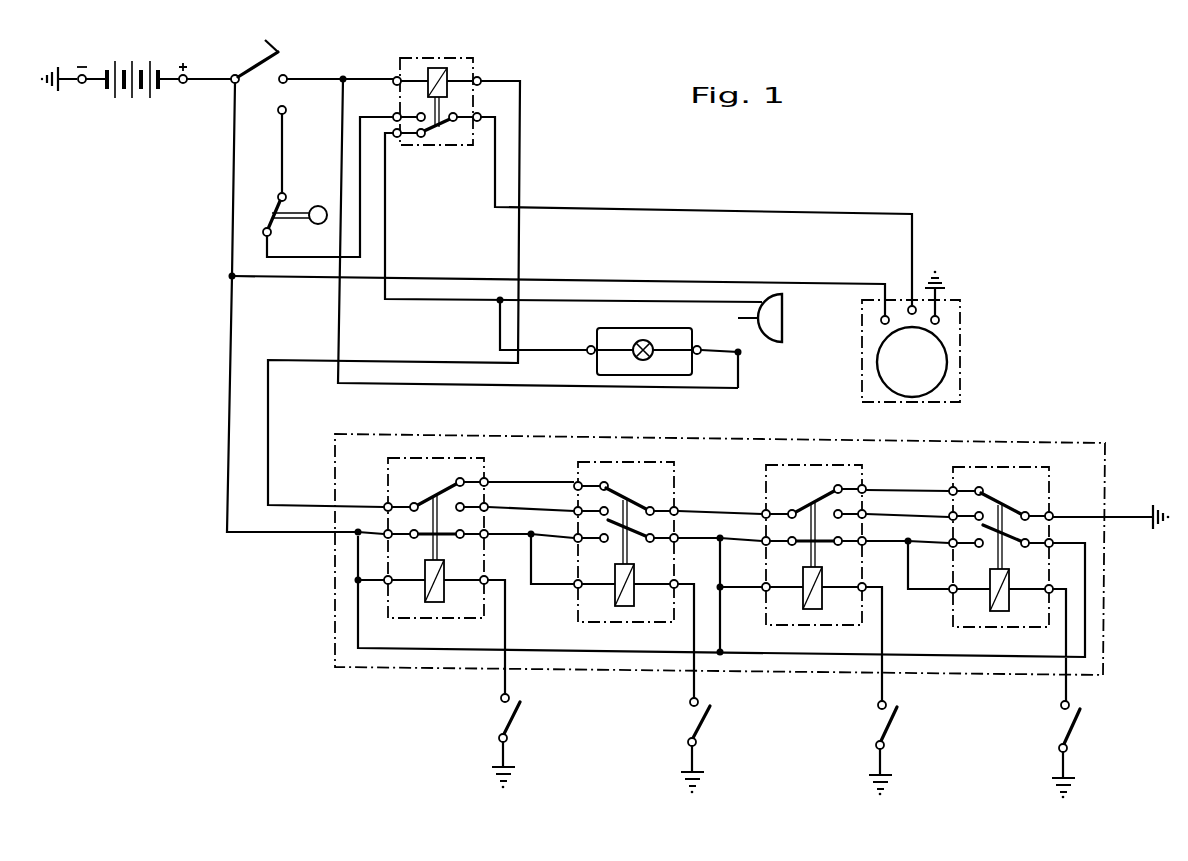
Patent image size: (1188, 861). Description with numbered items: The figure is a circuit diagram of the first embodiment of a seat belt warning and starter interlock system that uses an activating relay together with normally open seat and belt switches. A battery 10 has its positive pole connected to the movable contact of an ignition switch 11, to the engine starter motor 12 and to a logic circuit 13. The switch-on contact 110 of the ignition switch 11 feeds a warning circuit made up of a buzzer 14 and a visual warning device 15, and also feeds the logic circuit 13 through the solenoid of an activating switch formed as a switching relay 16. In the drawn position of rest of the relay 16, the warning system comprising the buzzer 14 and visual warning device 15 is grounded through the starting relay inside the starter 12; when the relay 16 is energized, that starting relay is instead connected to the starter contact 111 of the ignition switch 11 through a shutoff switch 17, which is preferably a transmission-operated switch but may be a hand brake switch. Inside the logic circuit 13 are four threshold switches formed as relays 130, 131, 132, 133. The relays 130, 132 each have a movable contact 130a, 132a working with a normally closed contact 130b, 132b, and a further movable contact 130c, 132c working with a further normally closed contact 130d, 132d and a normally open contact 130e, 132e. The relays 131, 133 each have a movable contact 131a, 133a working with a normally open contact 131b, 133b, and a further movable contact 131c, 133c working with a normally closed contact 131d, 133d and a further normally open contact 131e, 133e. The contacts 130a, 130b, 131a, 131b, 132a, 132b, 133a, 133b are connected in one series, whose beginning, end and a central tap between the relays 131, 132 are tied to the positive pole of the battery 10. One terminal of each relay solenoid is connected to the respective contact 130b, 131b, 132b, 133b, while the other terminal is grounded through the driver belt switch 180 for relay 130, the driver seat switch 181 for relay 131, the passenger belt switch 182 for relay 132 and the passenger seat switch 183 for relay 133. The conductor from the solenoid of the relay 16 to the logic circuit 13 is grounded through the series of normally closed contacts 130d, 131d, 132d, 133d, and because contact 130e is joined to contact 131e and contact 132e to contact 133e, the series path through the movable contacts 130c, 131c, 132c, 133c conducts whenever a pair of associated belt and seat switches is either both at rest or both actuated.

The battery 10 is at (140, 60).
The ignition switch 11 is at (263, 50).
The switch-on contact 110 is at (286, 74).
The starter contact 111 is at (287, 112).
The shutoff switch 17 is at (297, 208).
The switching relay 16 is at (478, 66).
The engine starter motor 12 is at (963, 339).
The buzzer 14 is at (784, 322).
The visual warning device 15 is at (600, 336).
The logic circuit 13 is at (1065, 443).
The relay 130 is at (461, 546).
The movable contact 130a is at (425, 547).
The normally closed contact 130b is at (488, 547).
The further movable contact 130c is at (426, 489).
The further normally closed contact 130d is at (491, 464).
The normally open contact 130e is at (497, 498).
The relay 131 is at (625, 549).
The movable contact 131a is at (660, 546).
The normally open contact 131b is at (600, 553).
The further movable contact 131c is at (636, 490).
The normally closed contact 131d is at (573, 469).
The further normally open contact 131e is at (573, 522).
The relay 132 is at (838, 550).
The movable contact 132a is at (803, 554).
The normally closed contact 132b is at (867, 554).
The further movable contact 132c is at (804, 495).
The further normally closed contact 132d is at (868, 469).
The normally open contact 132e is at (874, 504).
The relay 133 is at (983, 549).
The movable contact 133a is at (1017, 550).
The normally open contact 133b is at (976, 557).
The further movable contact 133c is at (1011, 494).
The normally closed contact 133d is at (948, 469).
The further normally open contact 133e is at (948, 525).
The driver belt switch 180 is at (513, 717).
The driver seat switch 181 is at (705, 721).
The passenger belt switch 182 is at (895, 724).
The passenger seat switch 183 is at (1079, 727).